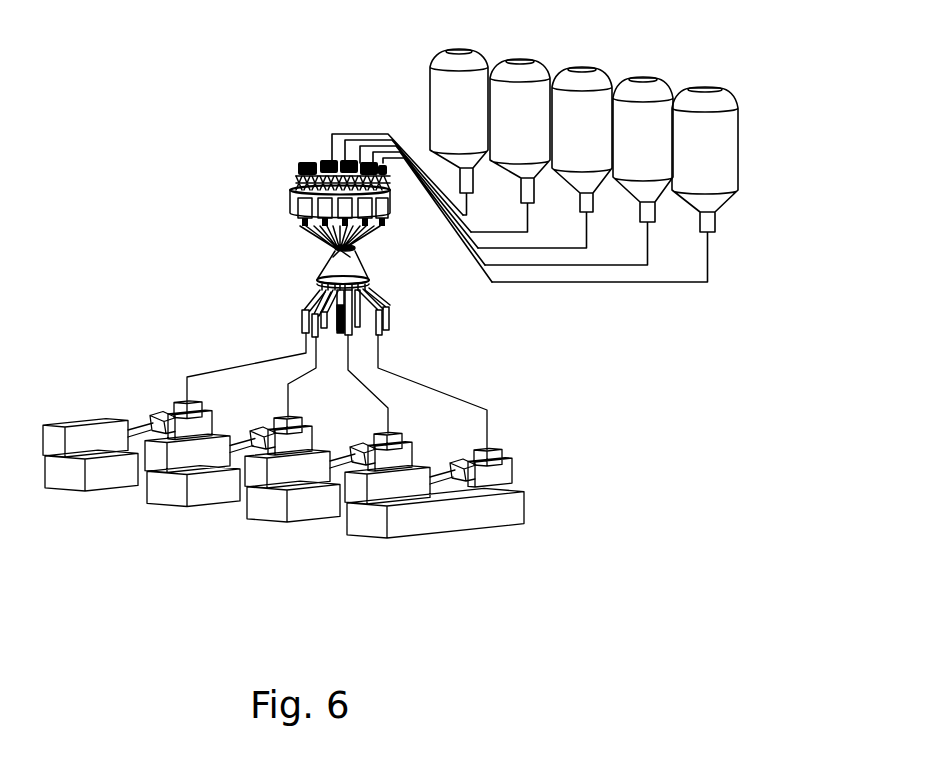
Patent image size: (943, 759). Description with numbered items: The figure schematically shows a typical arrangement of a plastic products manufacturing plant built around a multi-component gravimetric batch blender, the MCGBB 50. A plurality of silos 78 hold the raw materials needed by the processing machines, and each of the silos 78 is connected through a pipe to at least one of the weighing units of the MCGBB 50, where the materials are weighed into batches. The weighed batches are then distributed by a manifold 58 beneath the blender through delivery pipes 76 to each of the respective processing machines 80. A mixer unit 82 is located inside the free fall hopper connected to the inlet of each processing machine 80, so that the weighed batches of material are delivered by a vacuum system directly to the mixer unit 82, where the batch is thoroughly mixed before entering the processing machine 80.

The MCGBB 50 is at (267, 183).
The manifold 58 is at (303, 270).
The delivery pipes 76 is at (255, 358).
The silos 78 is at (430, 90).
The processing machines 80 is at (68, 415).
The mixer unit 82 is at (175, 403).